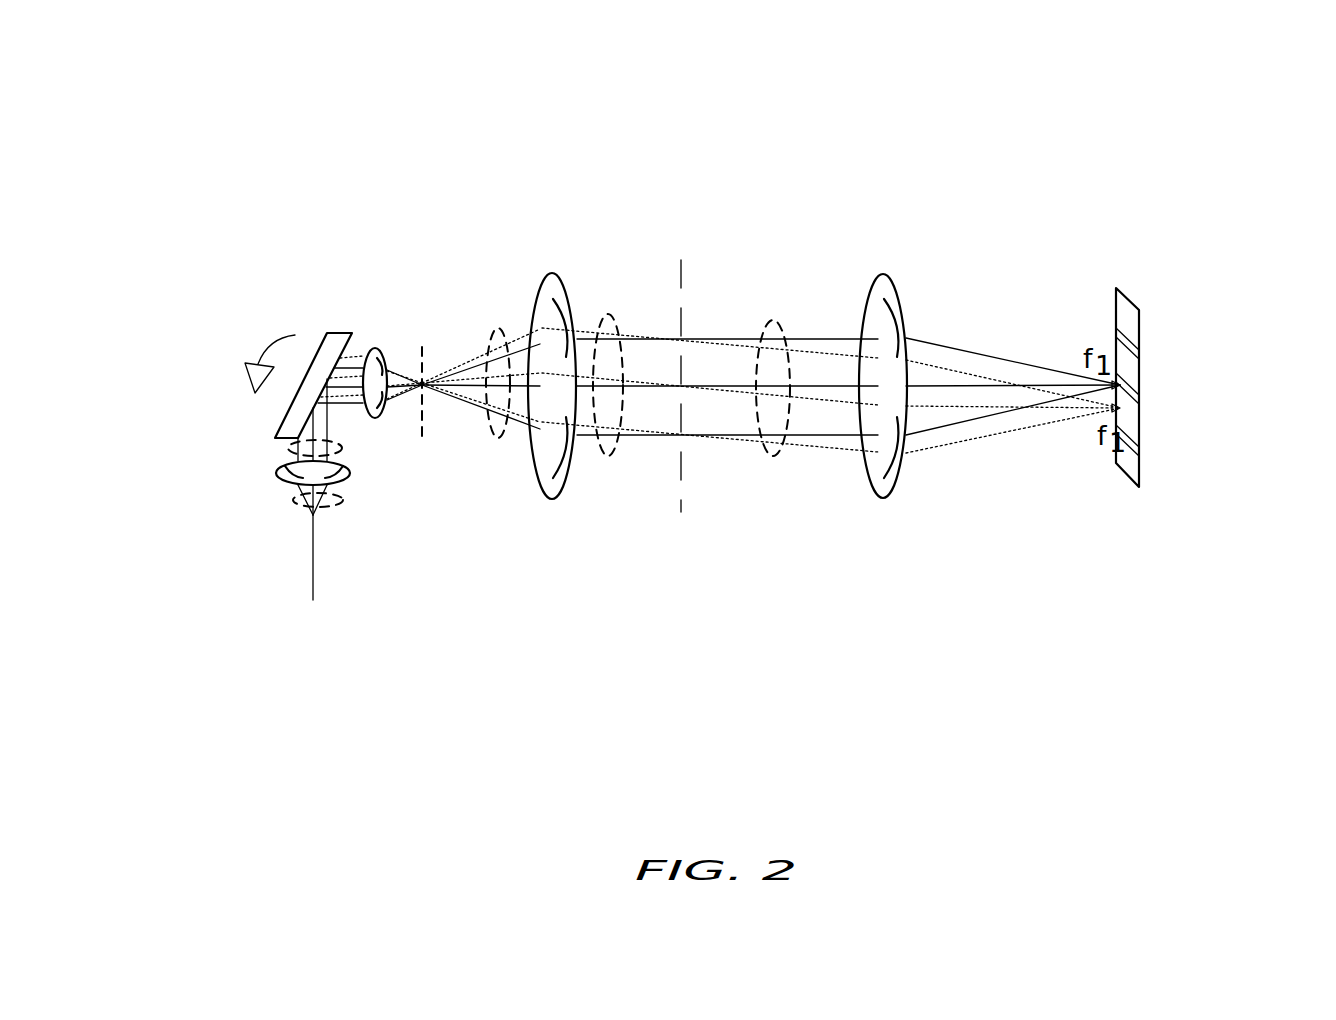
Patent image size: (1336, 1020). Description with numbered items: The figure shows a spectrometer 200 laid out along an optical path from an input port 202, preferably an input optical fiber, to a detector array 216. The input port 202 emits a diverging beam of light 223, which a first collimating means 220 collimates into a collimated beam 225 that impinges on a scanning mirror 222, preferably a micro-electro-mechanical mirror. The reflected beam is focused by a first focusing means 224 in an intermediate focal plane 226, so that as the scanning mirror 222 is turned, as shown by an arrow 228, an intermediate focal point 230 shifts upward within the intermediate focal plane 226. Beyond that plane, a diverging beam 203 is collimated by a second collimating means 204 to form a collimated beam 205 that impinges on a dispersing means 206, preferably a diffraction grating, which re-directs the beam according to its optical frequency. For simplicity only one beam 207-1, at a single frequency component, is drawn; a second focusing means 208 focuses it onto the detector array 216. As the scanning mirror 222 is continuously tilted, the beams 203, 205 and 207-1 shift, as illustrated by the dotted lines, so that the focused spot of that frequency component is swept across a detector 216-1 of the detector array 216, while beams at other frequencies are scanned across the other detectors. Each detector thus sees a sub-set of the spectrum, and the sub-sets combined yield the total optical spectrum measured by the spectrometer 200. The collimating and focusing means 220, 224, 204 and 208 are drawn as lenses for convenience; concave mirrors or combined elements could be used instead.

The spectrometer 200 is at (1015, 103).
The input port 202 is at (312, 583).
The diverging beam 203 is at (493, 330).
The second collimating means 204 is at (549, 273).
The collimated beam 205 is at (608, 456).
The dispersing means 206 is at (680, 258).
The beam at frequency component f1 207-1 is at (777, 458).
The second focusing means 208 is at (883, 273).
The detector array 216 is at (1140, 332).
The detector 216-1 is at (1140, 392).
The first collimating means 220 is at (276, 473).
The scanning mirror 222 is at (337, 332).
The diverging beam of light 223 is at (288, 498).
The first focusing means 224 is at (375, 348).
The collimated beam 225 is at (285, 445).
The intermediate focal plane 226 is at (422, 440).
The arrow 228 is at (268, 345).
The intermediate focal point 230 is at (426, 388).